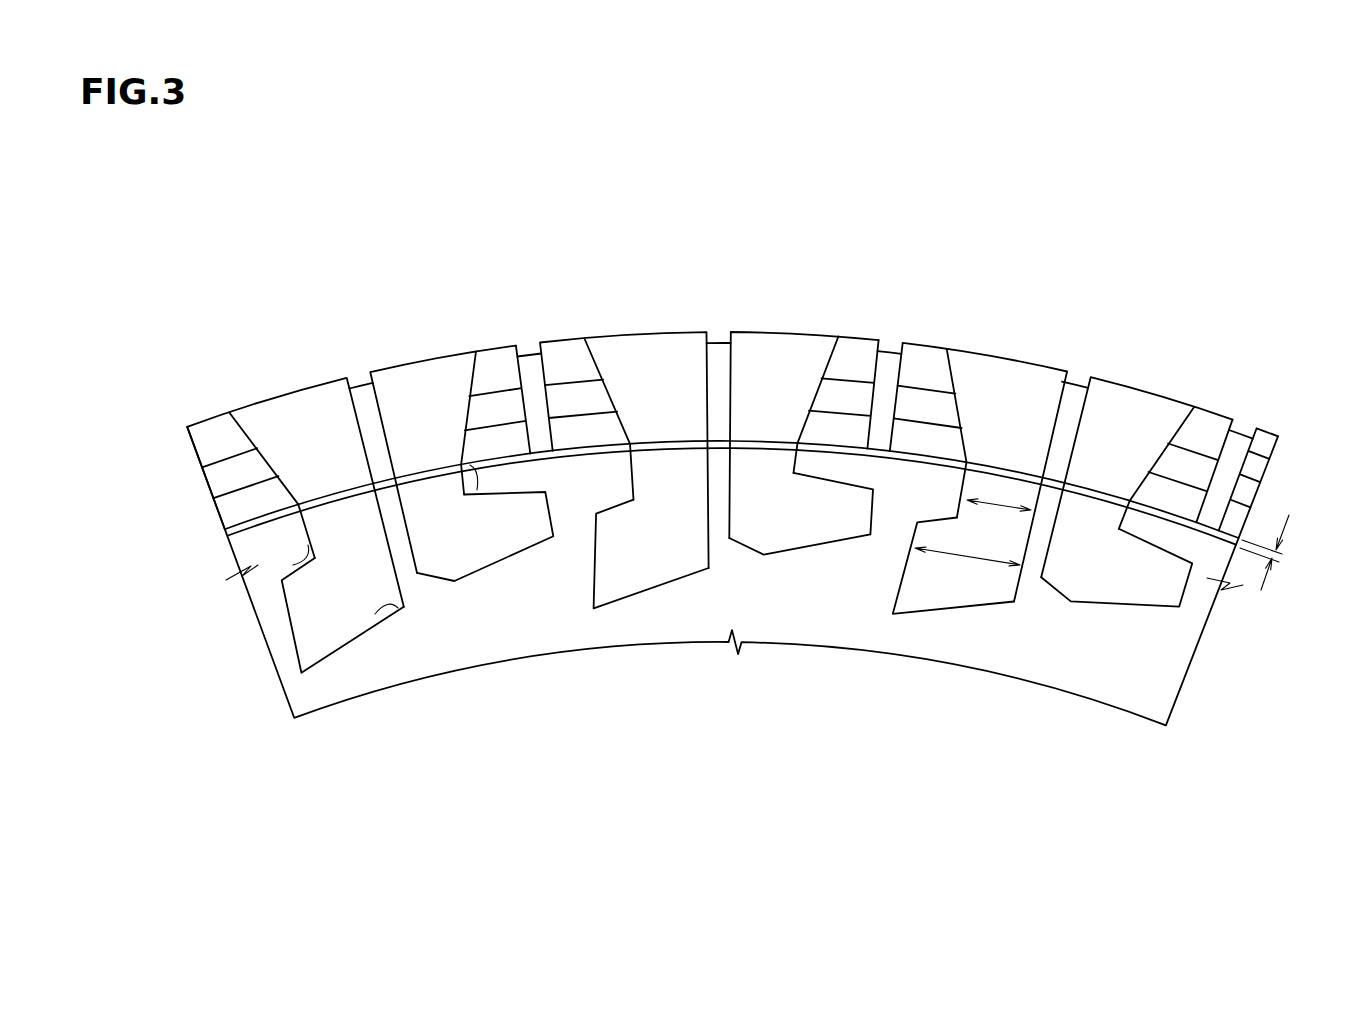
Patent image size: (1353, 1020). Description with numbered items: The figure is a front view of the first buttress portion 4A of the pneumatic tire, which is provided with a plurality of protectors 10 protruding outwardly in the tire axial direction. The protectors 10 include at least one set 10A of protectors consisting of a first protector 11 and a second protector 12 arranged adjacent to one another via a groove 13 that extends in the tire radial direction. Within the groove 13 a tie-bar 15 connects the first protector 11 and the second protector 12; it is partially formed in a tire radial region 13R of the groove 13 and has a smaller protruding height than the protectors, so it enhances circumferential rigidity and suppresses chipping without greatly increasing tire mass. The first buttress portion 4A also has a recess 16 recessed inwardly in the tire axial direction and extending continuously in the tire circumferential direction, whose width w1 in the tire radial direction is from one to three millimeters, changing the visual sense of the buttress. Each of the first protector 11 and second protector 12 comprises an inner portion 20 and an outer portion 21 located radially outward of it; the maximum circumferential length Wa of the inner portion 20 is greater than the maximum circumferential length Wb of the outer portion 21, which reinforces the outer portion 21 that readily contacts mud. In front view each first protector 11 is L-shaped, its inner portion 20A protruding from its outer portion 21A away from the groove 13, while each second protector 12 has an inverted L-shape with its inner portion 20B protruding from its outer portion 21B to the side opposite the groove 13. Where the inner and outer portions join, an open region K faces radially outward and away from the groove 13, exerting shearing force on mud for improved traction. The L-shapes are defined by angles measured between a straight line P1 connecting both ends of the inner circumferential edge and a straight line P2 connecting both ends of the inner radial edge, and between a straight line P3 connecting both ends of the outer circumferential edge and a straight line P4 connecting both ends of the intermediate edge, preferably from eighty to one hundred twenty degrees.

The first buttress portion 4A is at (550, 282).
The protector 10 is at (357, 643).
The set of protectors 10A is at (1058, 620).
The first protector 11 is at (795, 585).
The second protector 12 is at (622, 615).
The groove 13 is at (717, 477).
The tire radial region 13R is at (1032, 590).
The tie-bar 15 is at (720, 522).
The recess 16 is at (1170, 518).
The inner portion 20 is at (952, 583).
The inner portion of first protector 20A is at (847, 505).
The inner portion of second protector 20B is at (617, 545).
The outer portion 21 is at (995, 483).
The outer portion of first protector 21A is at (765, 473).
The outer portion of second protector 21B is at (665, 475).
The open region K is at (607, 480).
The outer end To is at (762, 331).
The maximum length of inner portion Wa is at (980, 560).
The maximum length of outer portion Wb is at (1030, 510).
The width of recess w1 is at (1283, 552).
The straight line connecting both ends of inner circumferential edge P1 is at (332, 658).
The straight line connecting both ends of inner radial edge P2 is at (342, 495).
The straight line connecting both ends of outer circumferential edge P3 is at (270, 572).
The straight line connecting both ends of intermediate edge P4 is at (307, 530).